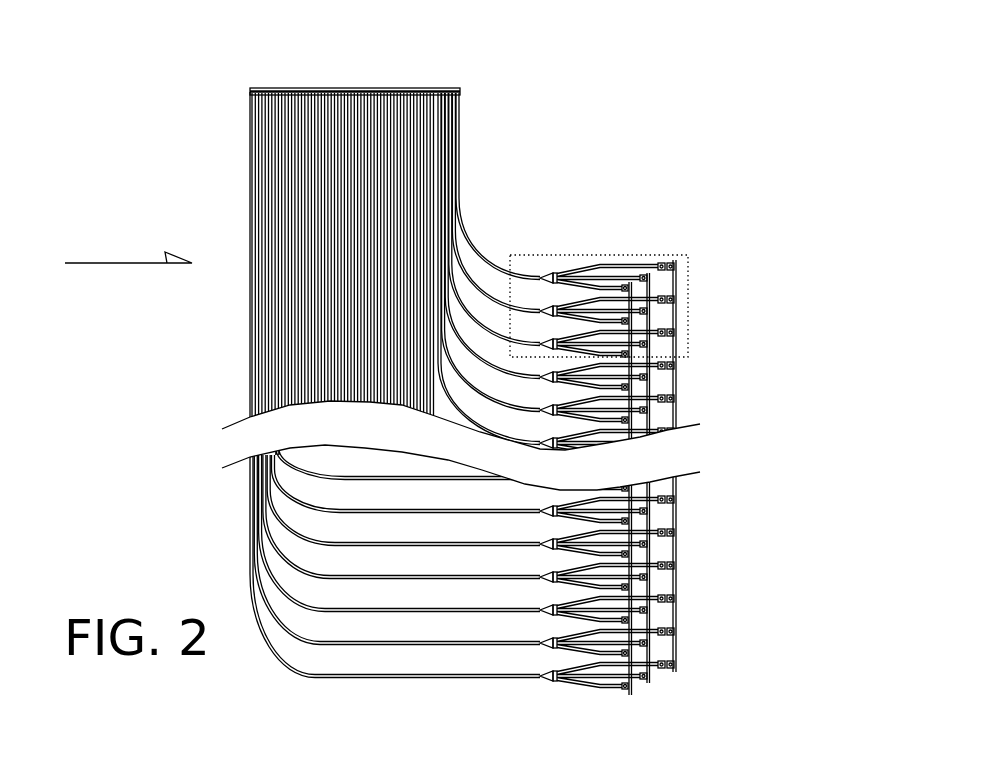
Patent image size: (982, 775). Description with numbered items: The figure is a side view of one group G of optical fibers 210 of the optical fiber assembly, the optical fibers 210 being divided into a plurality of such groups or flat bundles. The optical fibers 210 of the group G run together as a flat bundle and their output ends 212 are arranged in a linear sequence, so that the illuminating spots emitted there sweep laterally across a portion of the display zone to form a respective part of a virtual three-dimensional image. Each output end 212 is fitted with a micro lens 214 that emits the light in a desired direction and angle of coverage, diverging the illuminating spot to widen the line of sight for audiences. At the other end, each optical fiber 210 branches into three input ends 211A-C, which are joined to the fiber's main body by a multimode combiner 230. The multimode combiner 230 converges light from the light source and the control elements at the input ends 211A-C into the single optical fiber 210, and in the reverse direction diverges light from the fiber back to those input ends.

The optical fiber 210 is at (485, 289).
The output end 212 is at (250, 95).
The micro lens 214 is at (252, 92).
The multimode combiner 230 is at (545, 677).
The input ends 211A-C is at (638, 688).
The group G is at (109, 261).